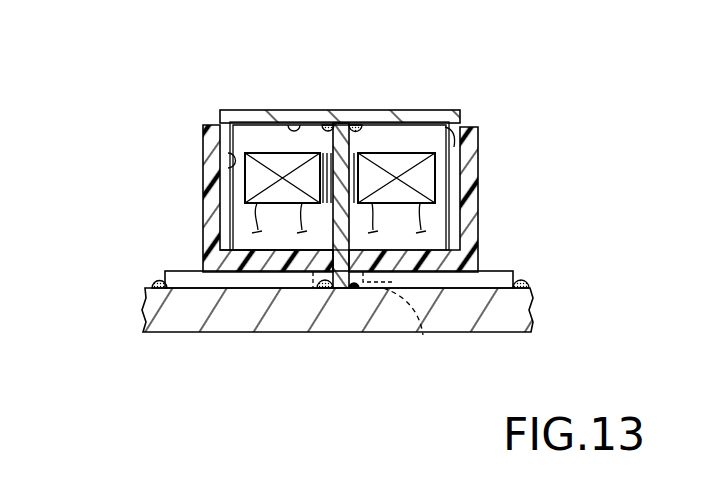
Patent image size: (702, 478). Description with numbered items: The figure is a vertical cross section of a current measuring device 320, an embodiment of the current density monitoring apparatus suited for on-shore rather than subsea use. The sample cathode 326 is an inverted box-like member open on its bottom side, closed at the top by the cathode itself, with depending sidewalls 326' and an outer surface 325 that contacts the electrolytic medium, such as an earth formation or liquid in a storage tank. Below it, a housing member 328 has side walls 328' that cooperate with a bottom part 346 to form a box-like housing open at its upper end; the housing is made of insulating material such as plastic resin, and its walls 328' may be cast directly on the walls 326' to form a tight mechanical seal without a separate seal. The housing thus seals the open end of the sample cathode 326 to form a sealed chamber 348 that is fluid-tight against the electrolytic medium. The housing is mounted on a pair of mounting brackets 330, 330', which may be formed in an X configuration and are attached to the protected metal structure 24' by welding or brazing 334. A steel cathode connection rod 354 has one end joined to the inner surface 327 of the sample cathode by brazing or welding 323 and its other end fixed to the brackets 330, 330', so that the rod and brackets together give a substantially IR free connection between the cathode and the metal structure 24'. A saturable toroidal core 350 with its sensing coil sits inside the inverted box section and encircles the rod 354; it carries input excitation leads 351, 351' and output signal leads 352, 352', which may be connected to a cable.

The metal structure 24' is at (383, 310).
The current measuring device 320 is at (453, 85).
The brazing or welding 323 is at (367, 122).
The surface 325 is at (345, 110).
The sample cathode 326 is at (421, 73).
The sidewalls 326' is at (324, 180).
The inner surface 327 is at (288, 119).
The housing member 328 is at (460, 199).
The side walls 328' is at (336, 198).
The mounting bracket 330 is at (368, 257).
The mounting bracket 330' is at (411, 328).
The welding or brazing 334 is at (148, 281).
The bottom part 346 is at (258, 252).
The sealed chamber 348 is at (244, 134).
The saturable toroidal core 350 is at (270, 152).
The input excitation lead 351 is at (352, 337).
The input excitation lead 351' is at (472, 215).
The output signal lead 352 is at (181, 218).
The output signal lead 352' is at (303, 285).
The cathode connection rod 354 is at (337, 147).